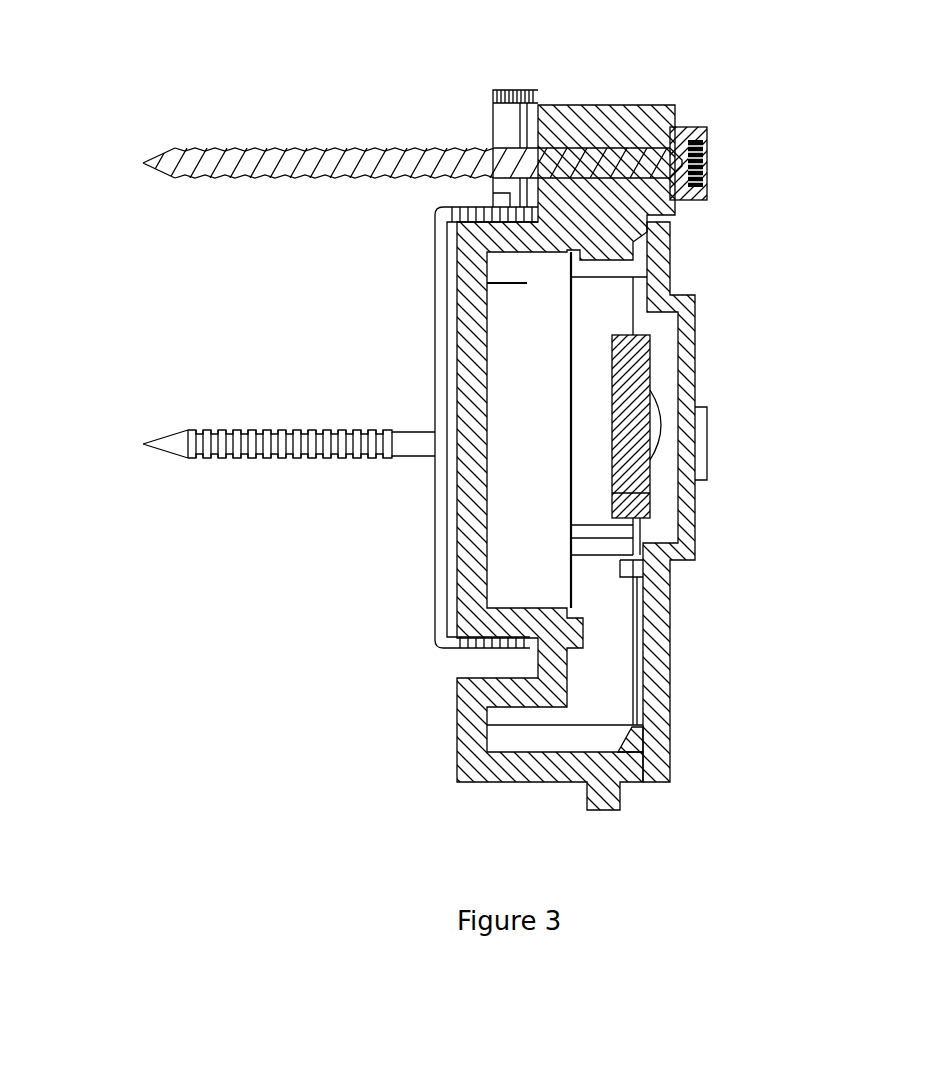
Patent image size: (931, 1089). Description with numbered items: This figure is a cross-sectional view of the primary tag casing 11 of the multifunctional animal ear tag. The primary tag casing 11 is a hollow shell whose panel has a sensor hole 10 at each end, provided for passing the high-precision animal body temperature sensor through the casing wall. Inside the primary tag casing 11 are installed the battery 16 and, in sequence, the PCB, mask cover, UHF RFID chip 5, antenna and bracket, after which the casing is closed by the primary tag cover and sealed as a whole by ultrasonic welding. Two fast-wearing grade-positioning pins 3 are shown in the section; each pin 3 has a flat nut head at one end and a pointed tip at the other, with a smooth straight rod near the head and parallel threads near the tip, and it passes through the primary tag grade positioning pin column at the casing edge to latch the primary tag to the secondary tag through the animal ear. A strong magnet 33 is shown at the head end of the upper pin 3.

The fast-wearing grade-positioning pin 3 is at (213, 165).
The ultra-high frequency radio frequency identification (UHF RFID) chip 5 is at (652, 408).
The sensor hole 10 is at (455, 280).
The primary tag casing 11 is at (473, 612).
The battery 16 is at (530, 525).
The strong magnet 33 is at (703, 155).